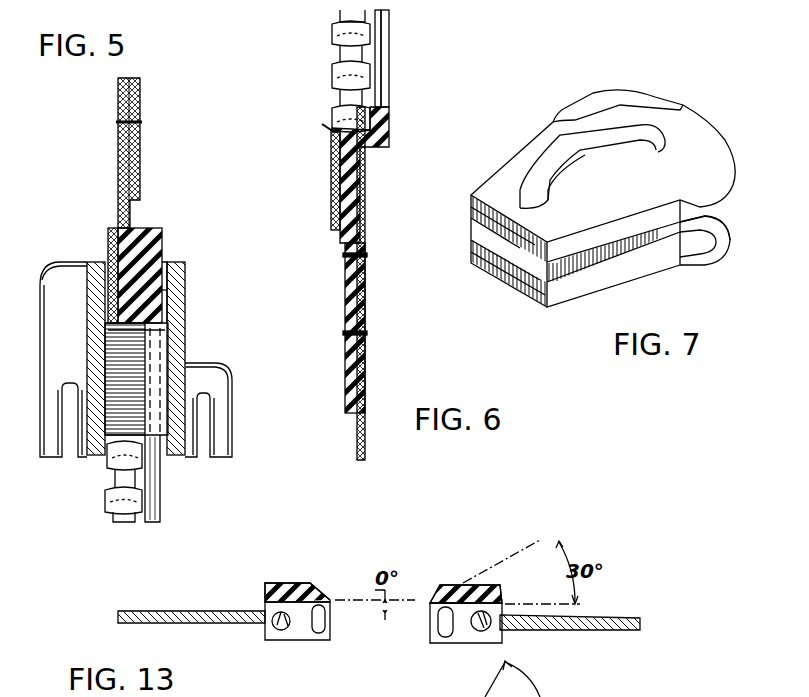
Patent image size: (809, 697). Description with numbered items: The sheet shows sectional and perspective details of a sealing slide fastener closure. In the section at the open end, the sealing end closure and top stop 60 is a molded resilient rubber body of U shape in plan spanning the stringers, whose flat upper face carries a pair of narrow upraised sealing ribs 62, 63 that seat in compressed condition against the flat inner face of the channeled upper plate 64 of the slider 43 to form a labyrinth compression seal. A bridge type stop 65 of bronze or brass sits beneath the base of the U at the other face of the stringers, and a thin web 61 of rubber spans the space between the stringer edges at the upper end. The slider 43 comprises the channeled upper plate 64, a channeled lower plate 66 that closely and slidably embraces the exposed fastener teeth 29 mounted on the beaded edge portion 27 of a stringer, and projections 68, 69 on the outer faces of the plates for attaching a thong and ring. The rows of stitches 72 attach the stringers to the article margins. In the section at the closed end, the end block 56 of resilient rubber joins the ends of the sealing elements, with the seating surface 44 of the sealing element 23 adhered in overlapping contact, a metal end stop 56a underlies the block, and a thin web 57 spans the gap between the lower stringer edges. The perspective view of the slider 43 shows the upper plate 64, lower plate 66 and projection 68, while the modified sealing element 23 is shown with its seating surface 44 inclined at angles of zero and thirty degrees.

In FIG. 5, the sealing element 23 is at (158, 522).
In FIG. 6, the sealing element 23 is at (395, 48).
In FIG. 5, the beaded edge portion 27 is at (116, 521).
In FIG. 6, the beaded edge portion 27 is at (342, 18).
In FIG. 5, the fastener elements or teeth 29 is at (108, 504).
In FIG. 6, the fastener elements or teeth 29 is at (334, 68).
In FIG. 5, the slider 43 is at (135, 382).
In FIG. 7, the slider 43 is at (624, 187).
In FIG. 6, the seating surface 44 is at (381, 26).
In FIG. 6, the end block 56 is at (368, 144).
In FIG. 6, the metal end stop 56a is at (331, 160).
In FIG. 6, the thin web 57 is at (350, 360).
In FIG. 5, the sealing end closure and top stop 60 is at (160, 250).
In FIG. 5, the thin web 61 is at (140, 145).
In FIG. 5, the sealing rib 62 is at (167, 303).
In FIG. 5, the sealing rib 63 is at (167, 280).
In FIG. 5, the channeled upper plate 64 is at (178, 458).
In FIG. 7, the channeled upper plate 64 is at (713, 150).
In FIG. 5, the bridge type stop 65 is at (108, 236).
In FIG. 5, the channeled lower plate 66 is at (96, 456).
In FIG. 7, the channeled lower plate 66 is at (712, 240).
In FIG. 5, the projection 68 is at (226, 458).
In FIG. 7, the projection 68 is at (553, 160).
In FIG. 5, the projection 69 is at (50, 457).
In FIG. 5, the rows of stitches 72 is at (140, 122).
In FIG. 6, the rows of stitches 72 is at (366, 256).